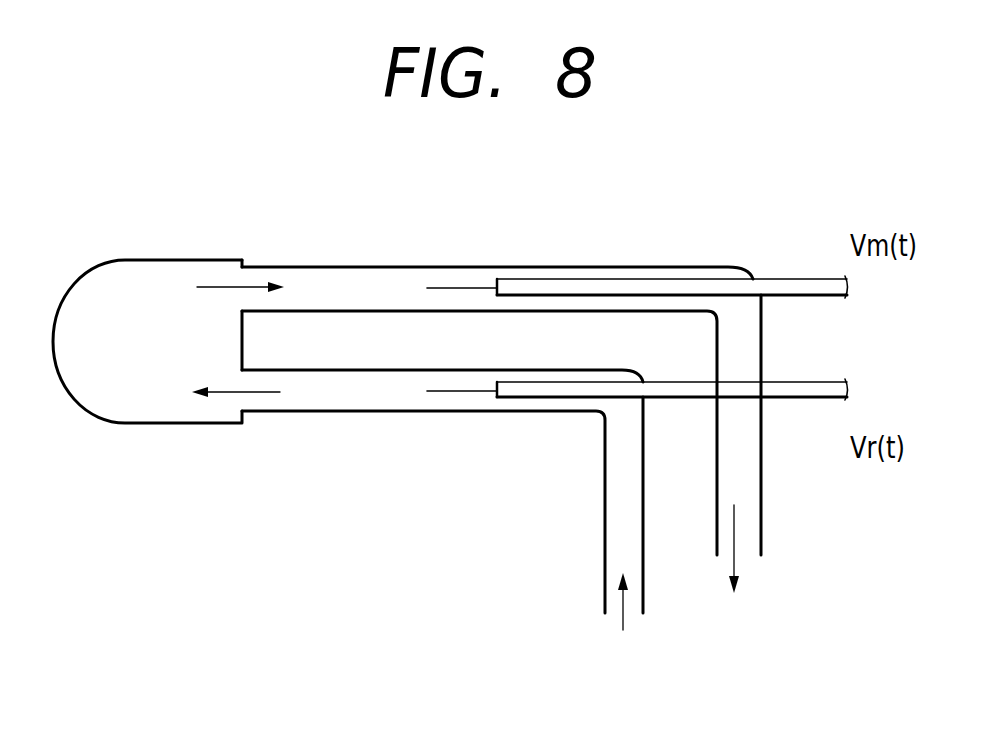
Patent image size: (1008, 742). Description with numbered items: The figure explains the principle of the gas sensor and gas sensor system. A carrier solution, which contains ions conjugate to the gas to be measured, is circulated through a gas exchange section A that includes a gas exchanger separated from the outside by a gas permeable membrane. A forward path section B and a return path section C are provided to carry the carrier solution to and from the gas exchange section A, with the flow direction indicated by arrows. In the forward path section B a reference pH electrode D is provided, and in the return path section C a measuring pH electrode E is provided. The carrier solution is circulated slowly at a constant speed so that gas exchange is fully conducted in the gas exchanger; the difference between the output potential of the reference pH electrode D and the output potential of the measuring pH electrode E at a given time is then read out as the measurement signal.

The gas exchange section A is at (165, 249).
The forward path section B is at (327, 415).
The return path section C is at (327, 267).
The reference pH electrode D is at (468, 392).
The measuring pH electrode E is at (470, 288).